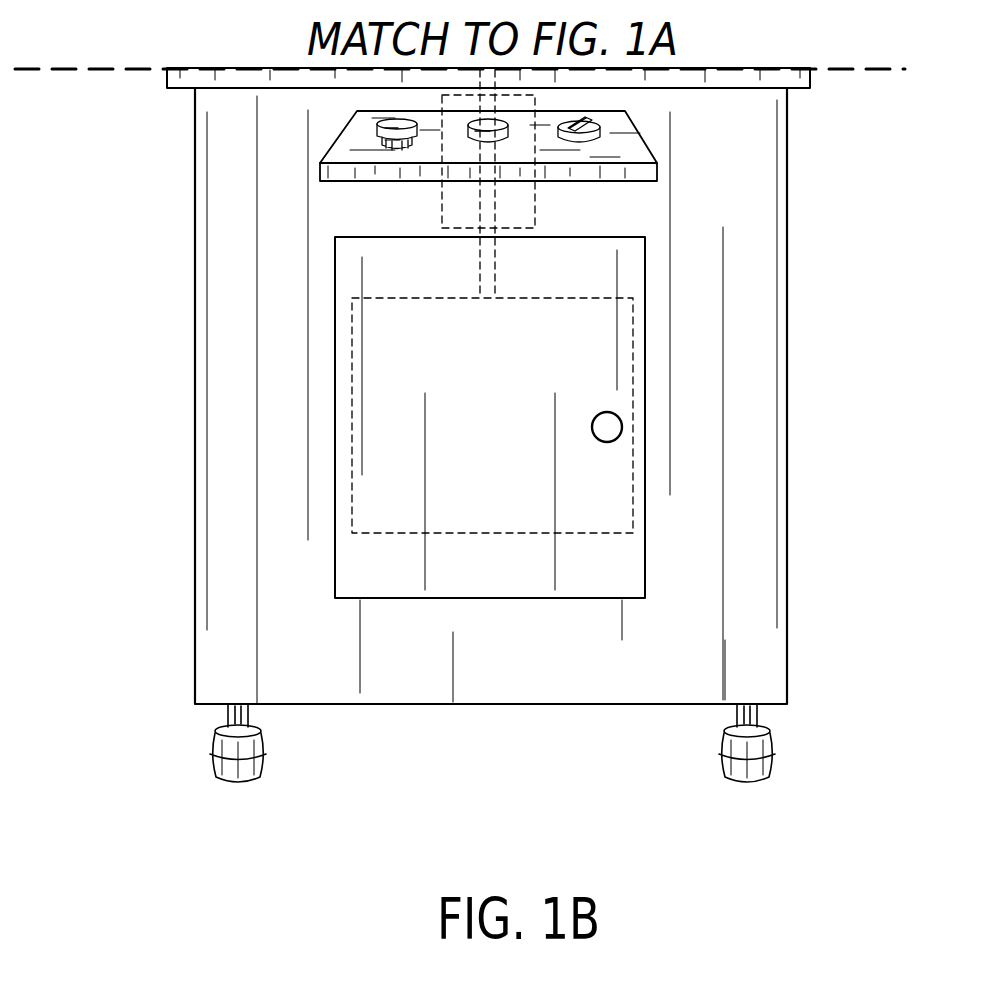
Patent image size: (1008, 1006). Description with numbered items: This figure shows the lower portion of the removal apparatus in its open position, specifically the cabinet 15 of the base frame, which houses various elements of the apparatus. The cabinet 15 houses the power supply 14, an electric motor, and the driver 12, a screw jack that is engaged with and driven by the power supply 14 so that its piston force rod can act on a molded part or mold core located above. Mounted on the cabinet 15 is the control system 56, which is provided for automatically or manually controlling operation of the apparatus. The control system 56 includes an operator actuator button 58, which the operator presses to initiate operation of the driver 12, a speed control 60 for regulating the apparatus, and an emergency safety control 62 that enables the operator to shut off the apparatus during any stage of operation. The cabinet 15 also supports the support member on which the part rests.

The driver 12 is at (440, 203).
The power supply 14 is at (352, 450).
The cabinet 15 is at (745, 400).
The control system 56 is at (658, 183).
The operator actuator button 58 is at (380, 132).
The speed control 60 is at (592, 121).
The emergency safety control 62 is at (473, 142).